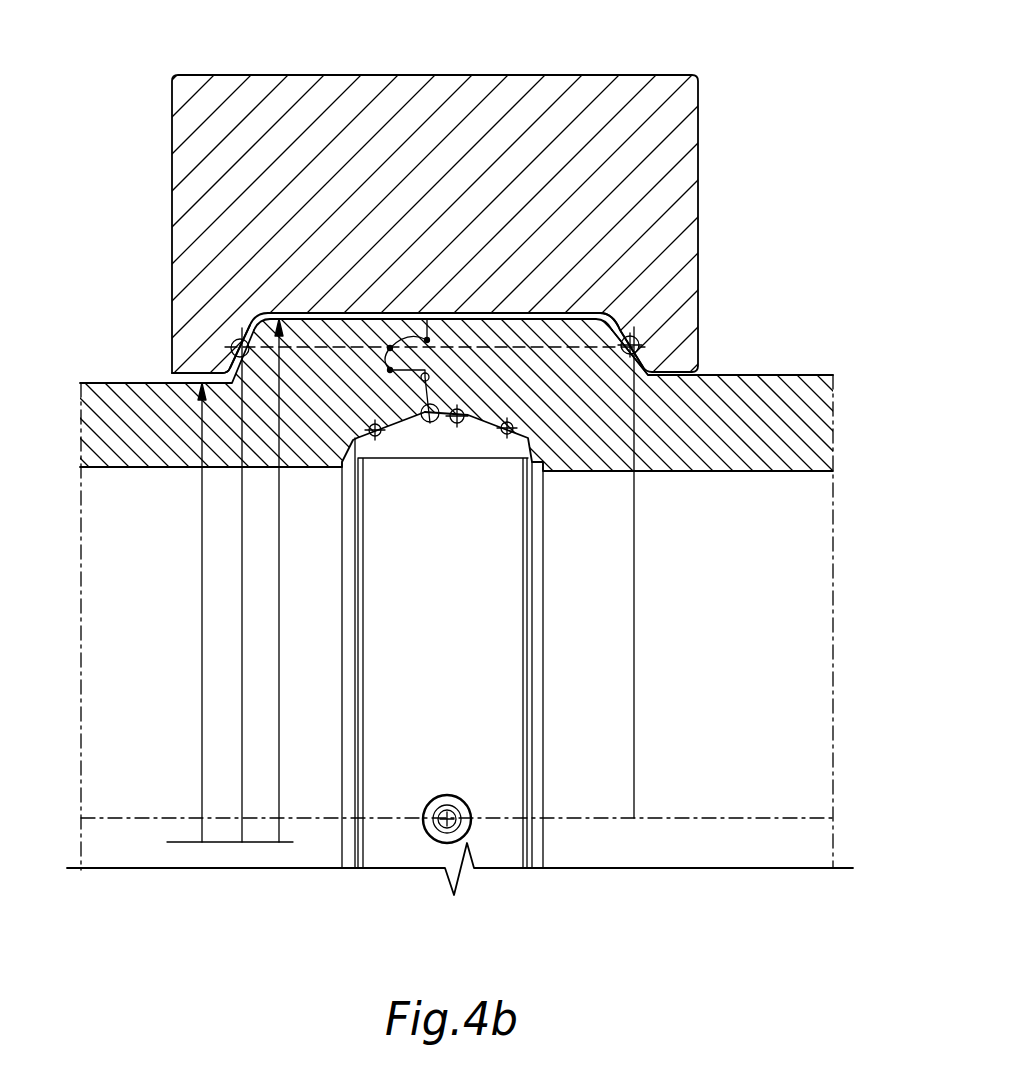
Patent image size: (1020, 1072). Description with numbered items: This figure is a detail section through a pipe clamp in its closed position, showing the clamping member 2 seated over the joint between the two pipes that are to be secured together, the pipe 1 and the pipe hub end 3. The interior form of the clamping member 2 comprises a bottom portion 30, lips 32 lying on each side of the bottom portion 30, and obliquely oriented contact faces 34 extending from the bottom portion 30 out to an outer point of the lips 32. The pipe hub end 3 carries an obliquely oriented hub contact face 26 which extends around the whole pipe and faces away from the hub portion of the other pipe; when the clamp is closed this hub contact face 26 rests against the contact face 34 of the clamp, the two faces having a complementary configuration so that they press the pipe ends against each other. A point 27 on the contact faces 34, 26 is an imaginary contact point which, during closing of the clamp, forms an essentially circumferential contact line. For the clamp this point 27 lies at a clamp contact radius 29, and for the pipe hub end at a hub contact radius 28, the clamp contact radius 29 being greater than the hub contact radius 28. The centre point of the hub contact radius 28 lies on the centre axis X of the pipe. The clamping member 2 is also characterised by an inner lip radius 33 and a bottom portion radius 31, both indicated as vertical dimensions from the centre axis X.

The pipe 1 is at (95, 443).
The clamping member 2 is at (630, 75).
The pipe hub end 3 is at (820, 405).
The hub contact face 26 is at (628, 330).
The point 27 is at (232, 342).
The hub contact radius 28 is at (637, 707).
The clamp contact radius 29 is at (242, 686).
The bottom portion 30 is at (380, 312).
The bottom portion radius 31 is at (281, 625).
The lip 32 is at (192, 359).
The inner lip radius 33 is at (201, 600).
The contact face 34 is at (638, 360).
The centre axis X is at (810, 816).